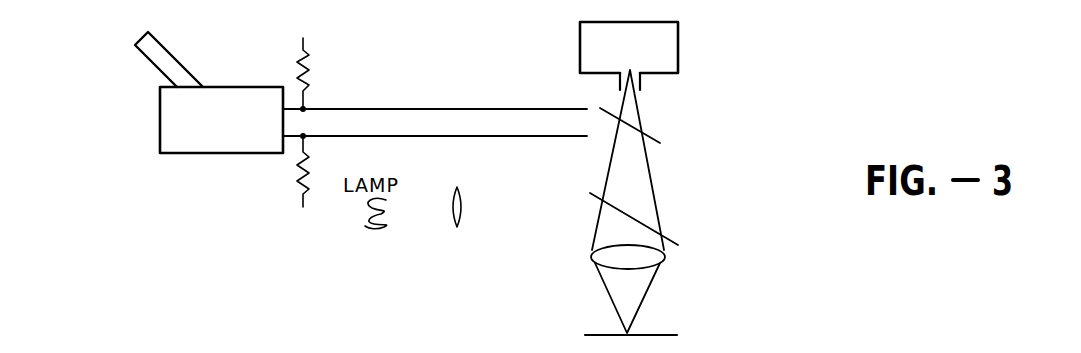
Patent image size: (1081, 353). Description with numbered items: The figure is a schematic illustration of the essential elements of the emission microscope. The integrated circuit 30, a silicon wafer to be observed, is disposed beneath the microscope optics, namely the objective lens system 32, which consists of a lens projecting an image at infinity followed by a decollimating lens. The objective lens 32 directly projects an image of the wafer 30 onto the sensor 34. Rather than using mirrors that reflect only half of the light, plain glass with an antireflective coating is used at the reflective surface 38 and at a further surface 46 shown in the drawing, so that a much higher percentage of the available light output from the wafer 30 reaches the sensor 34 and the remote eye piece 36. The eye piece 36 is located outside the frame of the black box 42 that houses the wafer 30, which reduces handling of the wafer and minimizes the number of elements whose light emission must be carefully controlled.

The integrated circuit 30 is at (650, 345).
The objective lens system 32 is at (676, 267).
The sensor 34 is at (678, 40).
The eye piece 36 is at (192, 153).
The reflective surface 38 is at (672, 237).
The black box 42 is at (330, 63).
The beam splitter mirror 46 is at (650, 133).